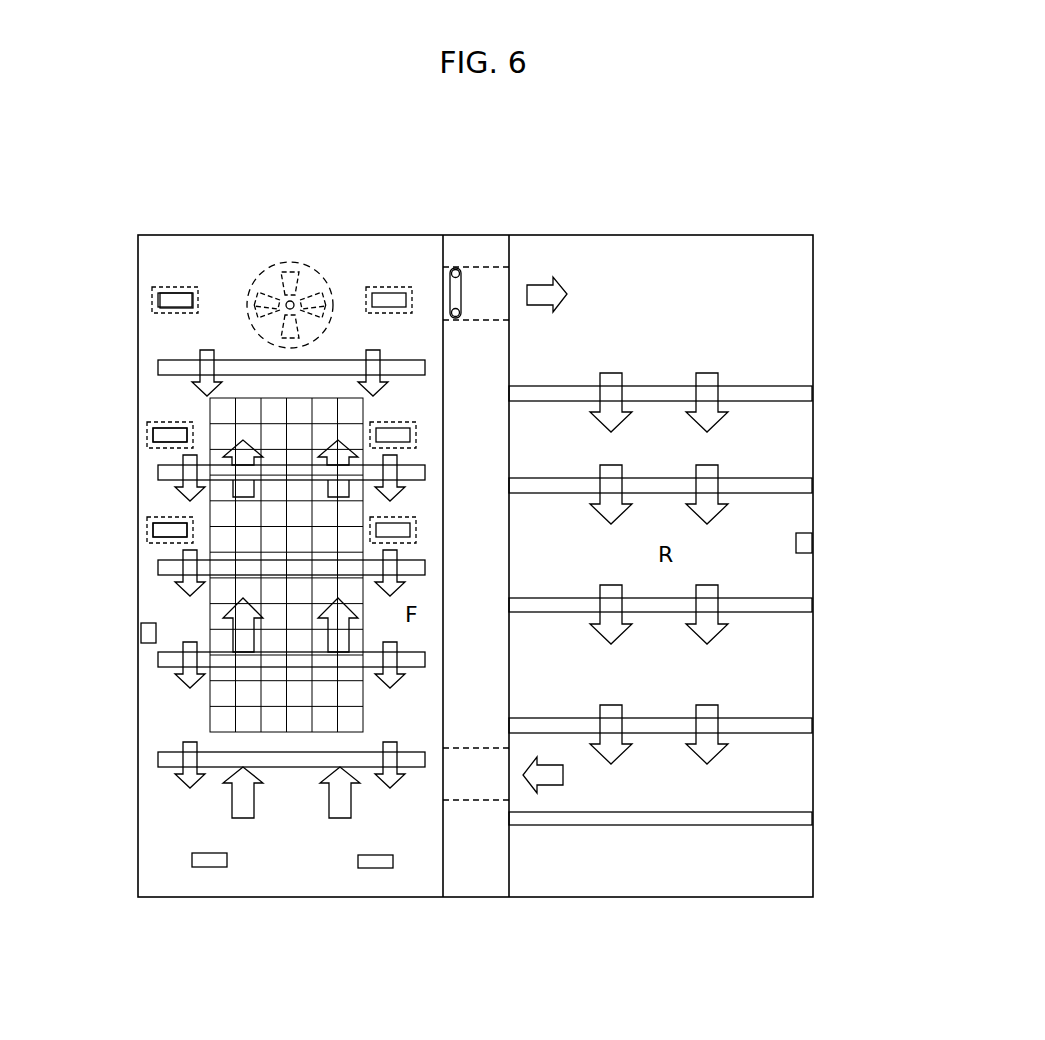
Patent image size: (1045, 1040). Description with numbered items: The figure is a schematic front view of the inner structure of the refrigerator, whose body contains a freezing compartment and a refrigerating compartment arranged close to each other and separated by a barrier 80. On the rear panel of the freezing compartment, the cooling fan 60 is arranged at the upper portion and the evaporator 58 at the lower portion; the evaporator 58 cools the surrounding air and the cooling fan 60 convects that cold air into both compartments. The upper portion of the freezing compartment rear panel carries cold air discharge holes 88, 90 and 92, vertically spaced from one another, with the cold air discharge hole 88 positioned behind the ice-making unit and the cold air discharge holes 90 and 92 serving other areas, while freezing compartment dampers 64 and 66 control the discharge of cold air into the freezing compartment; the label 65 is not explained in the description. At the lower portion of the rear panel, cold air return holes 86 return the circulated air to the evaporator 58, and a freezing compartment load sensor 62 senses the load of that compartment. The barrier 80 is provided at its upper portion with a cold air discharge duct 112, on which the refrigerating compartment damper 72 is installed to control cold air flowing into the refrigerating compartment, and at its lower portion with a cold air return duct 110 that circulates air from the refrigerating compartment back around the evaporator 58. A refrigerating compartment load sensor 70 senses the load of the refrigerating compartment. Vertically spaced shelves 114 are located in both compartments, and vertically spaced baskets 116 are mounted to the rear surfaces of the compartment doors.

The evaporator 58 is at (303, 745).
The cooling fan 60 is at (262, 278).
The freezing compartment load sensor 62 is at (143, 632).
The freezing compartment damper 64 is at (158, 288).
The second cold air discharge duct 65 is at (147, 423).
The freezing compartment damper 66 is at (147, 518).
The refrigerating compartment load sensor 70 is at (800, 540).
The refrigerating compartment damper 72 is at (448, 290).
The barrier 80 is at (487, 368).
The cold air return holes 86 is at (212, 870).
The cold air discharge hole 88 is at (158, 306).
The cold air discharge hole 90 is at (157, 437).
The cold air discharge hole 92 is at (157, 530).
The cold air return duct 110 is at (478, 802).
The cold air discharge duct 112 is at (470, 265).
The shelves 114 is at (160, 762).
The baskets 116 is at (810, 603).